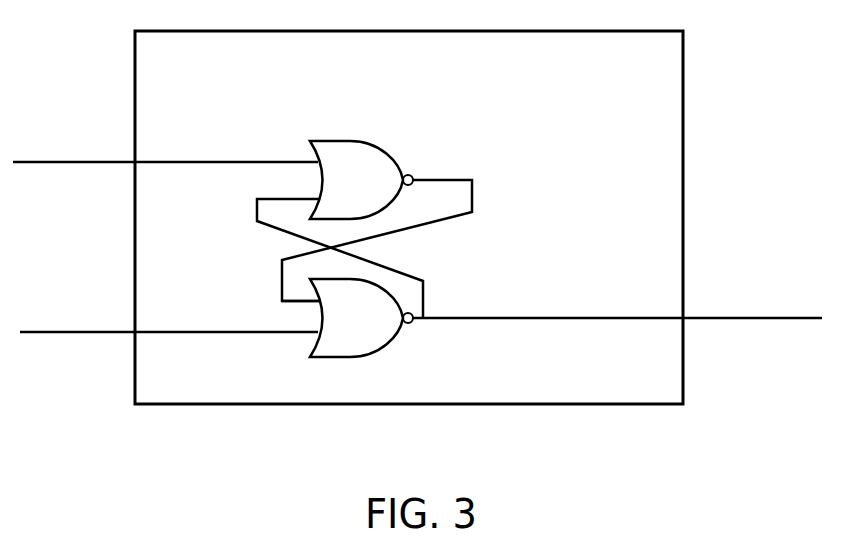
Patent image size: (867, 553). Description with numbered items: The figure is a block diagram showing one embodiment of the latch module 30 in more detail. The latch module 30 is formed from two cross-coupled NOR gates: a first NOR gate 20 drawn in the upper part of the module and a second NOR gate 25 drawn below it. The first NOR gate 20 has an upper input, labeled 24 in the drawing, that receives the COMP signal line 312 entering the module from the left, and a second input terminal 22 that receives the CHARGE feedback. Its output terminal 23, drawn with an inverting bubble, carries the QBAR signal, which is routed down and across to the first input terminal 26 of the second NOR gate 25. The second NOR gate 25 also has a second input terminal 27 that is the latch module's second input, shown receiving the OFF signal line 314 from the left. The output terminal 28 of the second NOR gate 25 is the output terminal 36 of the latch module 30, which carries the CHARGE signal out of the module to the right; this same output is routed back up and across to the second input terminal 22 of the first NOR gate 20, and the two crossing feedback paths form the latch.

The latch module 30 is at (646, 80).
The first NOR gate 20 is at (373, 187).
The second NOR gate 25 is at (373, 327).
The second input terminal 22 is at (316, 197).
The output terminal 23 is at (411, 170).
The comparator input of first NOR gate 24 is at (316, 157).
The first input terminal 26 is at (315, 303).
The second input terminal 27 is at (316, 336).
The output terminal 28 is at (424, 317).
The COMP signal line 312 is at (135, 162).
The OFF signal line 314 is at (135, 332).
The output terminal 36 is at (686, 314).